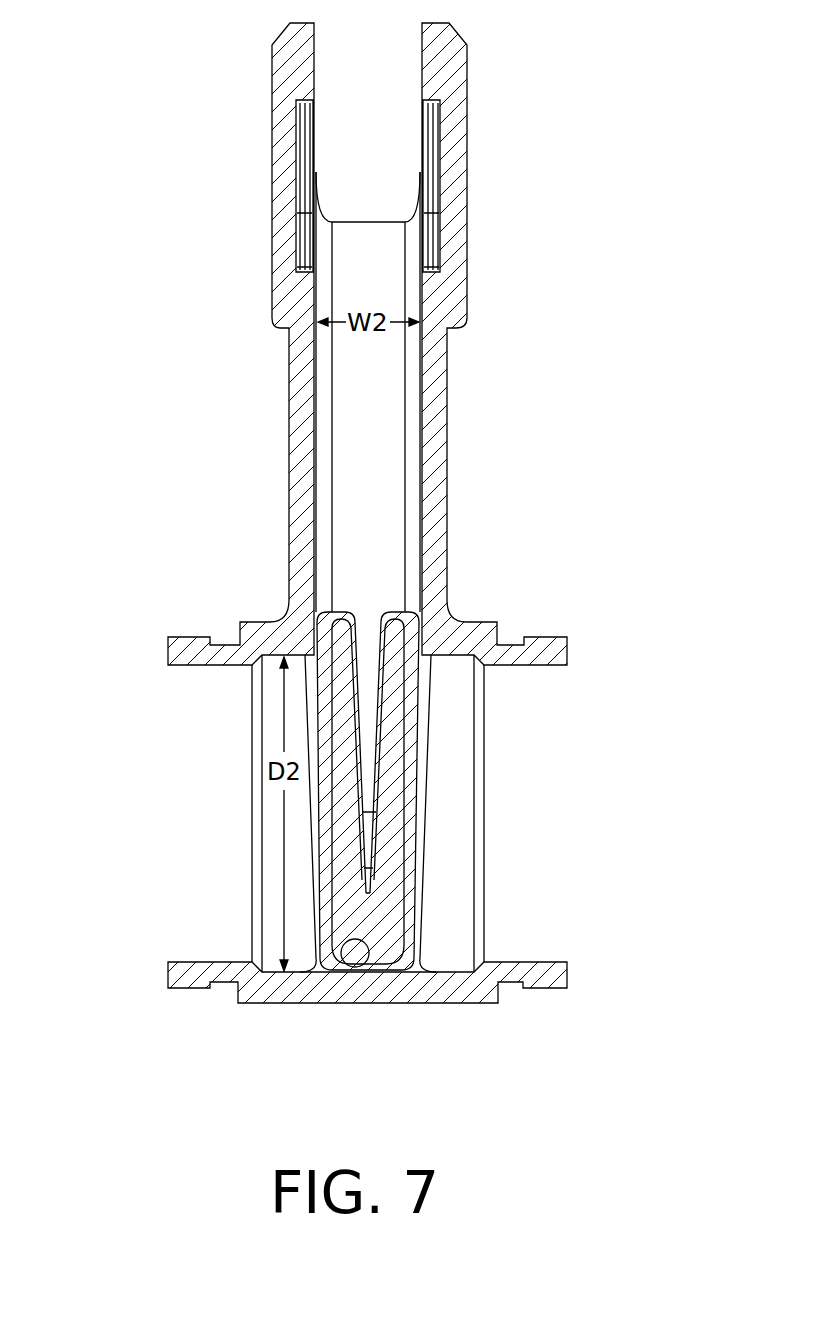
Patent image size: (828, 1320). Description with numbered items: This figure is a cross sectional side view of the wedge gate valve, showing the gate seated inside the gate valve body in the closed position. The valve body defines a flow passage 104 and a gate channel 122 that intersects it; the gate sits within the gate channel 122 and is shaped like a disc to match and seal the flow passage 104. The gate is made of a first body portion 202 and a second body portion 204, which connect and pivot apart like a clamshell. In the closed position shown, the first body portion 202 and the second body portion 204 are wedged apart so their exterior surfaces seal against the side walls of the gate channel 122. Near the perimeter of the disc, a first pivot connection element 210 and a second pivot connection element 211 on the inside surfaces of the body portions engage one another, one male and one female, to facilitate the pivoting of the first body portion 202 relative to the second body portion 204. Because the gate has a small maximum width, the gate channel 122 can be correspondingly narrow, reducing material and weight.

The flow passage 104 is at (472, 808).
The gate channel 122 is at (390, 271).
The first body portion 202 is at (342, 683).
The second body portion 204 is at (418, 728).
The first pivot connection element 210 is at (400, 940).
The second pivot connection element 211 is at (317, 967).